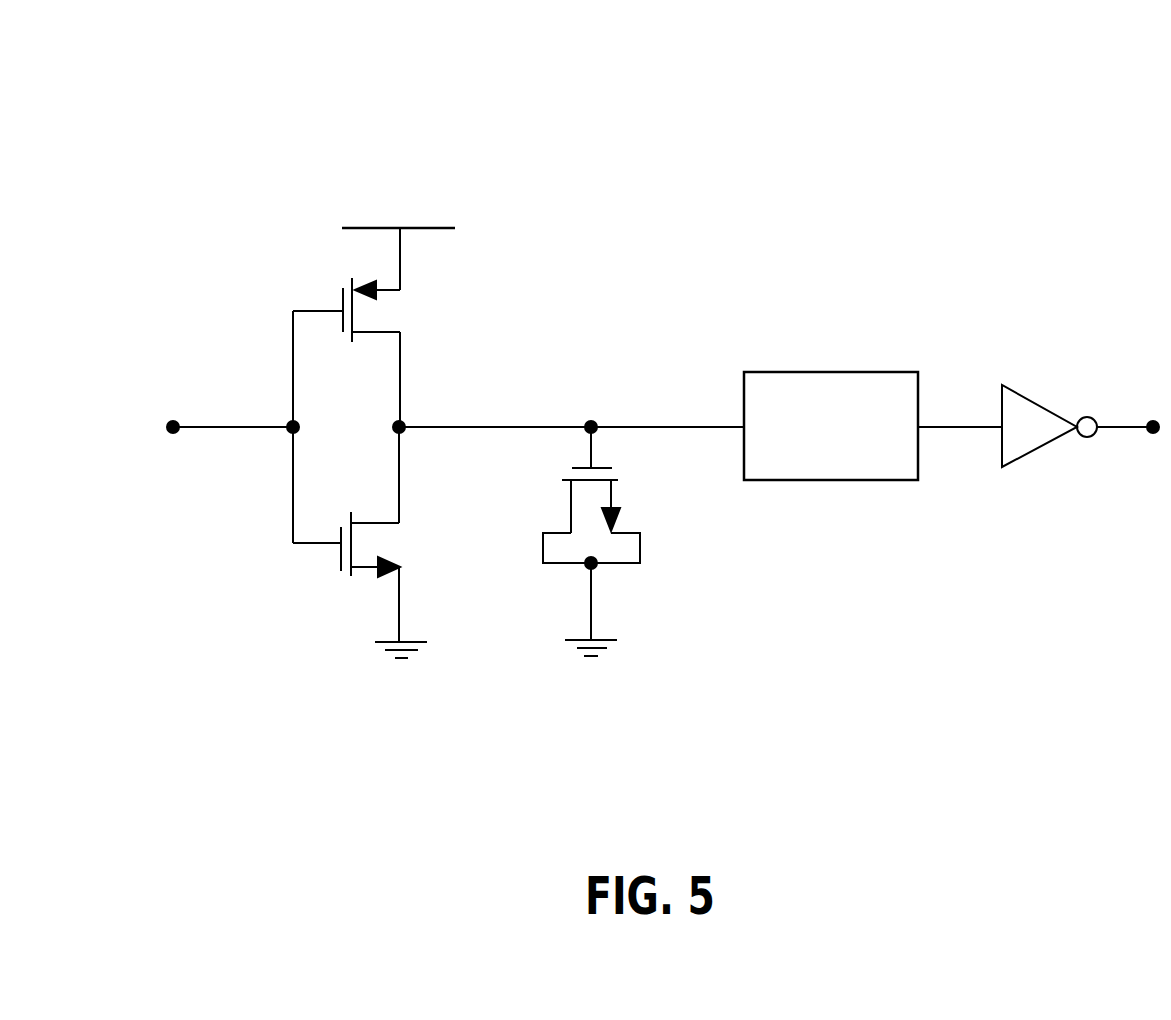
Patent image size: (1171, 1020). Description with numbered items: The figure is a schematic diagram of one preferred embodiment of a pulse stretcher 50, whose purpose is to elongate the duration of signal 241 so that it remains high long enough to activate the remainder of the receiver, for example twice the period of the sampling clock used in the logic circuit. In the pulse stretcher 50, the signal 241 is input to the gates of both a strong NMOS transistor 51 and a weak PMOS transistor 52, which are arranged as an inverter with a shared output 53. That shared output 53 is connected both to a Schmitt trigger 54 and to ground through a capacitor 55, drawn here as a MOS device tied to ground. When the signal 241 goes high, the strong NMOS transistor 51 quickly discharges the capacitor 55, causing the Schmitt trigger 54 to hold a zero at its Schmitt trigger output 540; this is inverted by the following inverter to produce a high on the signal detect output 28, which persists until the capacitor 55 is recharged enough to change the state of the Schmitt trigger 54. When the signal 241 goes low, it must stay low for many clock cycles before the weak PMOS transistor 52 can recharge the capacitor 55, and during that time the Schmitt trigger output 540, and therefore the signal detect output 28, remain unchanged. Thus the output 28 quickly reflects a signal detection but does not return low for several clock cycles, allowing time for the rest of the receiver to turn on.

The pulse stretcher 50 is at (620, 91).
The signal 241 is at (251, 425).
The weak PMOS transistor 52 is at (333, 295).
The strong NMOS transistor 51 is at (334, 566).
The shared output 53 is at (405, 423).
The capacitor 55 is at (657, 508).
The Schmitt trigger 54 is at (852, 372).
The Schmitt trigger output 540 is at (948, 425).
The signal detect output 28 is at (1118, 425).